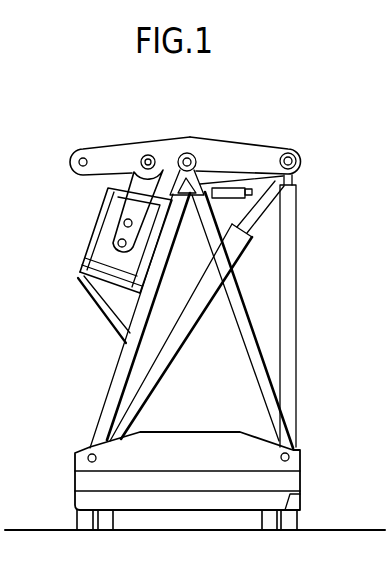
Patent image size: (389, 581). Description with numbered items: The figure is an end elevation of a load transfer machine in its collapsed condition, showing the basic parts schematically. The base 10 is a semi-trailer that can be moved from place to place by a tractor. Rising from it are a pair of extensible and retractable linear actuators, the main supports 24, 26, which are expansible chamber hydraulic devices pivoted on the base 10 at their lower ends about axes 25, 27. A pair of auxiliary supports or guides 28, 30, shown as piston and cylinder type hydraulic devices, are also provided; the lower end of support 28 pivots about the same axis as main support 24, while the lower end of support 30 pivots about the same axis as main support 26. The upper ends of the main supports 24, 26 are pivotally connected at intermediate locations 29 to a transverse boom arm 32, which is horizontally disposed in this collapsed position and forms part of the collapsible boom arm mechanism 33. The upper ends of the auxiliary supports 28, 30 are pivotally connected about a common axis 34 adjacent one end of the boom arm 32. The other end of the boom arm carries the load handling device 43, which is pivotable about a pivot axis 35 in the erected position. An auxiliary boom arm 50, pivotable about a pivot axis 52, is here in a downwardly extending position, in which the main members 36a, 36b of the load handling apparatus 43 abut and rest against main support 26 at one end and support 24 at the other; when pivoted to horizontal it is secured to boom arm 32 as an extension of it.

The base 10 is at (192, 500).
The main support 24 is at (237, 340).
The pivot axis 25 is at (298, 448).
The main support 26 is at (113, 373).
The pivot axis 27 is at (90, 452).
The auxiliary support 28 is at (290, 332).
The intermediate location 29 is at (189, 152).
The auxiliary support 30 is at (160, 377).
The transverse boom arm 32 is at (232, 153).
The collapsible boom arm mechanism 33 is at (106, 134).
The common axis 34 is at (292, 152).
The pivot axis 35 is at (120, 242).
The main member 36a is at (80, 277).
The main member 36b is at (107, 202).
The load handling device 43 is at (80, 308).
The auxiliary boom arm 50 is at (132, 195).
The pivot axis 52 is at (148, 152).